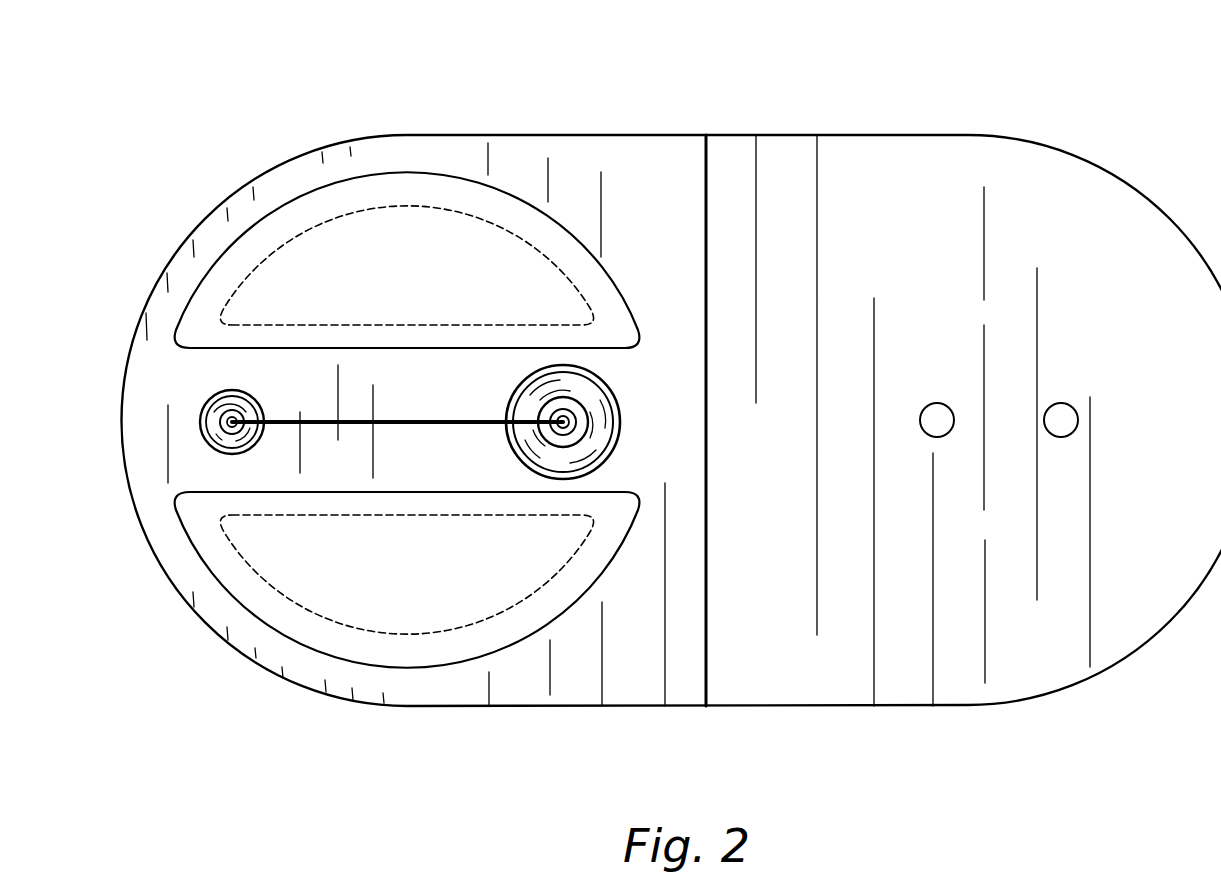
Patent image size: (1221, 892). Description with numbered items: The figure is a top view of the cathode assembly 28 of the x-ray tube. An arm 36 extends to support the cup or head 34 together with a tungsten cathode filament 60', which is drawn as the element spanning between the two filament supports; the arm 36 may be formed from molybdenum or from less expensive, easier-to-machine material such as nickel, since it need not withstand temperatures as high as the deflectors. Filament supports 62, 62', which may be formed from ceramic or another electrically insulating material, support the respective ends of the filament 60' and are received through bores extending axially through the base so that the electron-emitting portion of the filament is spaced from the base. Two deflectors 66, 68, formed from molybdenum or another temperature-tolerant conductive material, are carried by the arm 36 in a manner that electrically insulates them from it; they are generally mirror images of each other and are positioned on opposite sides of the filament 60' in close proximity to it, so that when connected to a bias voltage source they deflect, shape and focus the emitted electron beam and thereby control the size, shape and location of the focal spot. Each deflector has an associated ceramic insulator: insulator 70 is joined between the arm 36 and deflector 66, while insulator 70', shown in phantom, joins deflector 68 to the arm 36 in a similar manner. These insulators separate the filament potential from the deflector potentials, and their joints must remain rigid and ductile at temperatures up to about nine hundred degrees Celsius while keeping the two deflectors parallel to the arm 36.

The cathode assembly 28 is at (398, 106).
The cup or head 34 is at (124, 371).
The arm 36 is at (803, 708).
The deflector 66 is at (298, 208).
The deflector 68 is at (309, 633).
The insulator 70 is at (456, 265).
The insulator 70' is at (406, 651).
The filament support 62 is at (215, 407).
The filament support 62' is at (598, 422).
The connecting member 60' is at (397, 393).